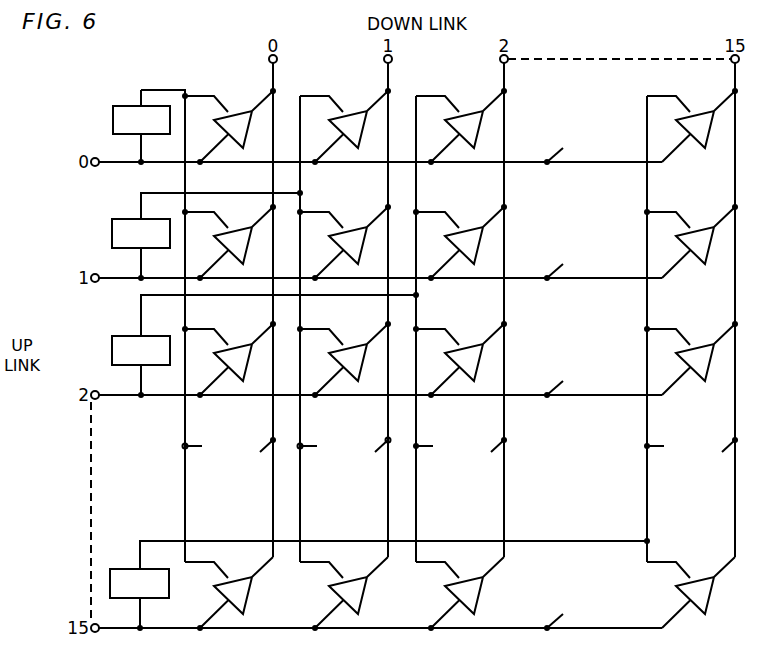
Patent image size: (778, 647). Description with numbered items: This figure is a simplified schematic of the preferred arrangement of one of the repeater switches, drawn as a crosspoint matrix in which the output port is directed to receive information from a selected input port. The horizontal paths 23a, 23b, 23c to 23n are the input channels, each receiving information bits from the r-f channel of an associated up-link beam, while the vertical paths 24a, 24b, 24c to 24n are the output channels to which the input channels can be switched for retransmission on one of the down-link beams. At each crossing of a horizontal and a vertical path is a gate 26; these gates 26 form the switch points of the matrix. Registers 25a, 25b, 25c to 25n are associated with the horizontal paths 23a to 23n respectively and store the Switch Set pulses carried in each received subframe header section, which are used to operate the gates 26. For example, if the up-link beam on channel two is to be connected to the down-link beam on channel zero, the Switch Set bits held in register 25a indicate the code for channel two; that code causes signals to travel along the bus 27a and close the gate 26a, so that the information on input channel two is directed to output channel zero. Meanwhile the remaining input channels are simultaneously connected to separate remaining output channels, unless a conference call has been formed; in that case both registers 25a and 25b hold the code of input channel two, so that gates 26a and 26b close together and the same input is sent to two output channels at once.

The horizontal path 23a is at (611, 162).
The horizontal path 23b is at (618, 278).
The horizontal path 23c is at (618, 395).
The horizontal path 23n is at (620, 628).
The vertical path 24a is at (272, 503).
The vertical path 24b is at (388, 494).
The vertical path 24c is at (504, 494).
The vertical path 24n is at (735, 498).
The register 25a is at (116, 106).
The register 25b is at (122, 219).
The register 25c is at (122, 336).
The register 25n is at (122, 569).
The gate 26 is at (460, 355).
The gate 26a is at (243, 373).
The gate 26b is at (360, 373).
The bus 27a is at (170, 90).